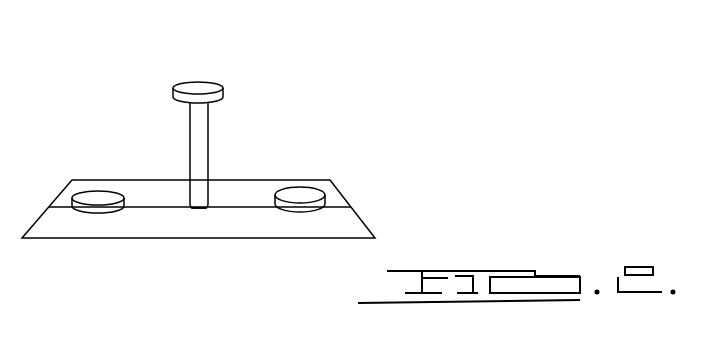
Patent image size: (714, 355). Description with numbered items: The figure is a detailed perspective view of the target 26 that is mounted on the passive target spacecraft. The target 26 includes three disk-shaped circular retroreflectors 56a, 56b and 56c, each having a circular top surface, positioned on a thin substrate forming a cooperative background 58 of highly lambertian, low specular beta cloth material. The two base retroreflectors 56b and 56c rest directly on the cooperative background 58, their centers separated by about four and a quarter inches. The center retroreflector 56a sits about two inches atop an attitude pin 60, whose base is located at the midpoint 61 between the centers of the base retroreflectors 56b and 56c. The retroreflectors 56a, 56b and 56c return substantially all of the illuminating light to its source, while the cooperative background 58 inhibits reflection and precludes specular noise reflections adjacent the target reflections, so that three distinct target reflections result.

The target 26 is at (355, 112).
The center retroreflector 56a is at (203, 88).
The base retroreflector 56b is at (93, 195).
The base retroreflector 56c is at (308, 193).
The cooperative background 58 is at (68, 225).
The attitude pin 60 is at (200, 135).
The midpoint 61 is at (201, 210).